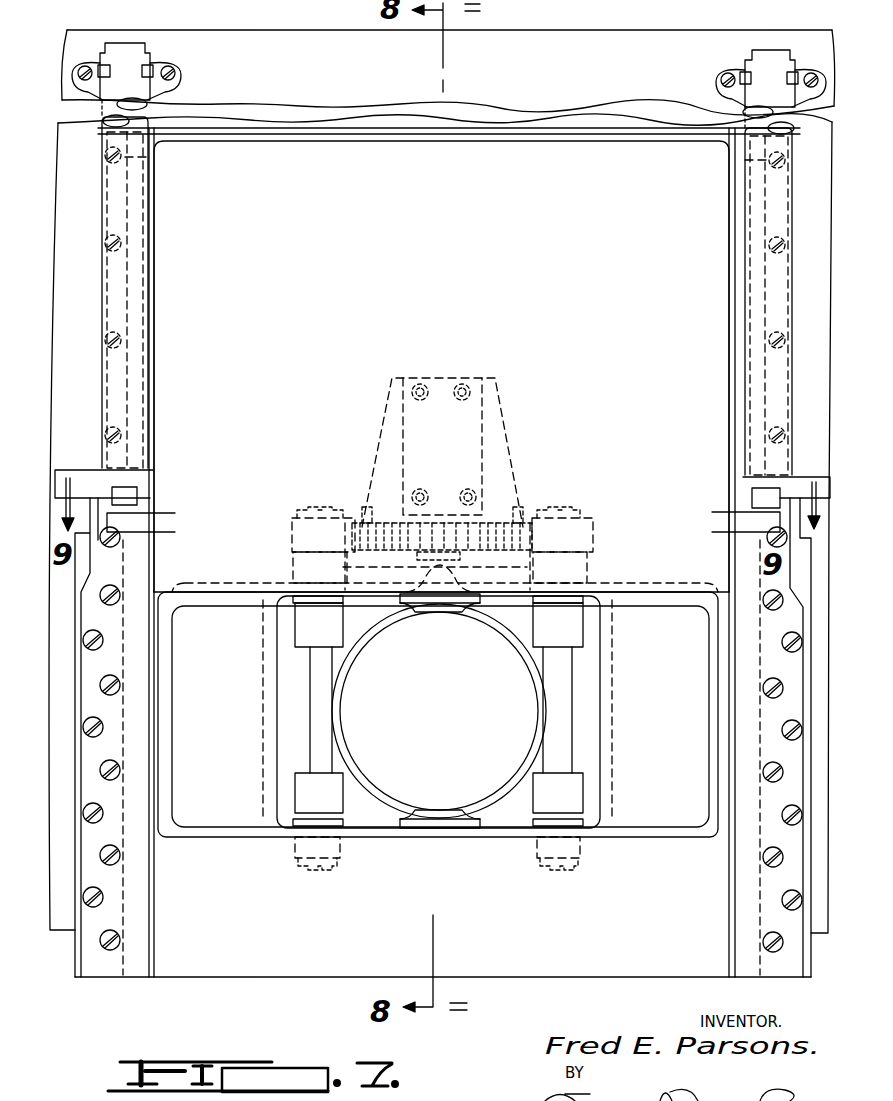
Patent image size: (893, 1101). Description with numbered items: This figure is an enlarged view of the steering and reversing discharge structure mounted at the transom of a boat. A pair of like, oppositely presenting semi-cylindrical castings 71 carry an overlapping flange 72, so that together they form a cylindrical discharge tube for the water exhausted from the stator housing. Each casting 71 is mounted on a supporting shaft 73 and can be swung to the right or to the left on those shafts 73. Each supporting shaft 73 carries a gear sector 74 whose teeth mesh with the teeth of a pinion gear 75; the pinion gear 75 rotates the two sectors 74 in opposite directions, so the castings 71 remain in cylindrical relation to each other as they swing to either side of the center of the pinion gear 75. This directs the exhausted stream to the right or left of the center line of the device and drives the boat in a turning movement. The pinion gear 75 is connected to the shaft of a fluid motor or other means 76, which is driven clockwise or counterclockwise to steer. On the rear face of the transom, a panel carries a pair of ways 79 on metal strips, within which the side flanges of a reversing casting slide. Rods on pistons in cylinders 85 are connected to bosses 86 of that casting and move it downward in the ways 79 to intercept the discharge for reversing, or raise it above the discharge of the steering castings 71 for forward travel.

The semi-cylindrical casting 71 is at (537, 703).
The overlapping flange 72 is at (438, 600).
The supporting shaft 73 is at (300, 507).
The gear sector 74 is at (367, 507).
The pinion gear 75 is at (433, 530).
The fluid motor 76 is at (502, 405).
The way 79 is at (112, 712).
The cylinder 85 is at (140, 243).
The boss 86 is at (162, 512).